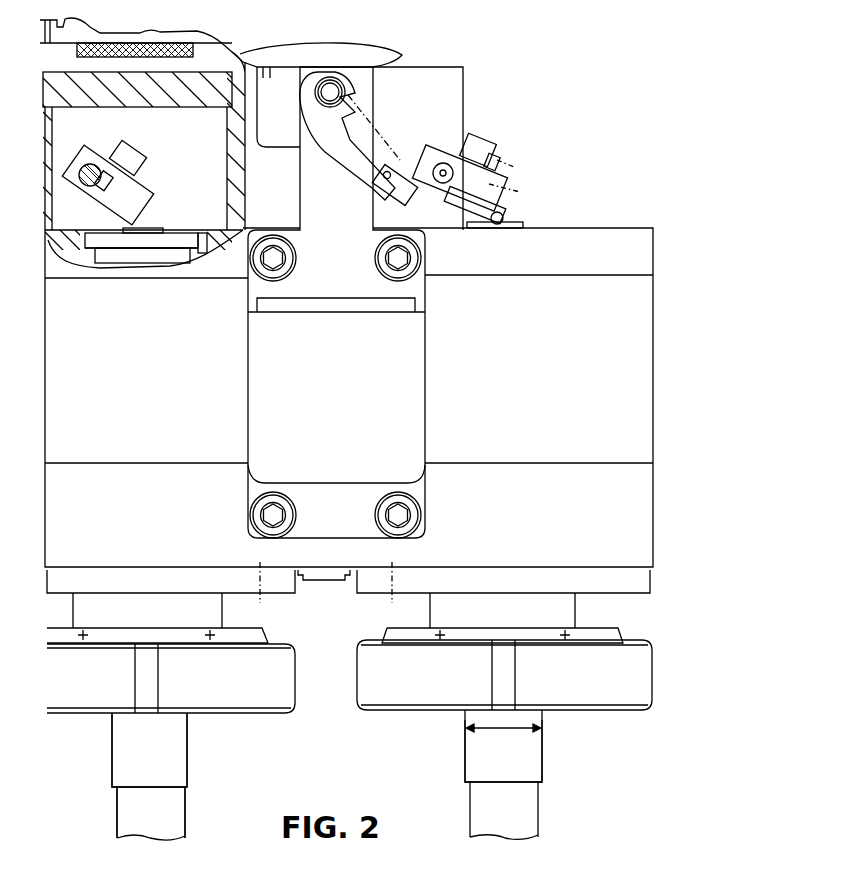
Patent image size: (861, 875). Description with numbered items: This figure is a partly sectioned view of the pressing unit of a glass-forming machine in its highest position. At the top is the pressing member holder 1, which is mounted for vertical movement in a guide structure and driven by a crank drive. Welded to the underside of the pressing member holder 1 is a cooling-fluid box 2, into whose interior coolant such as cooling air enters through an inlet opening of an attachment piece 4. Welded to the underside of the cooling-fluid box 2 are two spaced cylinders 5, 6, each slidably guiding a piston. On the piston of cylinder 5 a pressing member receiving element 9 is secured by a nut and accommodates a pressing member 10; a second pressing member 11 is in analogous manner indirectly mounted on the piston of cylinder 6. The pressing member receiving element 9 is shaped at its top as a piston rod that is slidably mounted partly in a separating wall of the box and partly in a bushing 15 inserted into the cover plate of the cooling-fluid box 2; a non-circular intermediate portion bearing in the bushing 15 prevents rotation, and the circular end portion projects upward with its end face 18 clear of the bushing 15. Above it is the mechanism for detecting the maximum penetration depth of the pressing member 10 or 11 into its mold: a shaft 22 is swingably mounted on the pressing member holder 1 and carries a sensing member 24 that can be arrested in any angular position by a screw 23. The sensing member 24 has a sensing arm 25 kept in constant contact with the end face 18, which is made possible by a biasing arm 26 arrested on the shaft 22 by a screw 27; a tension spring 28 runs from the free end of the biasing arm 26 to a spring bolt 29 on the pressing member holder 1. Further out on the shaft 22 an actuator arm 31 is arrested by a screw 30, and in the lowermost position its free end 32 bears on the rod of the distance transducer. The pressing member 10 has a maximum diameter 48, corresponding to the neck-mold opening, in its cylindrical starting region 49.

The pressing member holder 1 is at (185, 108).
The cooling-fluid box 2 is at (540, 448).
The attachment piece 4 is at (427, 380).
The cylinder 5 is at (368, 595).
The cylinder 6 is at (287, 593).
The pressing member receiving element 9 is at (222, 607).
The pressing member 10 is at (542, 808).
The pressing member 11 is at (187, 815).
The bushing 15 is at (183, 228).
The end face 18 is at (125, 224).
The shaft 22 is at (105, 160).
The screw 23 is at (140, 150).
The sensing member 24 is at (75, 165).
The sensing arm 25 is at (148, 218).
The biasing arm 26 is at (398, 197).
The screw 27 is at (415, 133).
The tension spring 28 is at (365, 115).
The spring bolt 29 is at (346, 92).
The screw 30 is at (483, 142).
The actuator arm 31 is at (500, 200).
The free end 32 is at (470, 213).
The maximum diameter 48 is at (512, 728).
The cylindrical starting region 49 is at (465, 757).